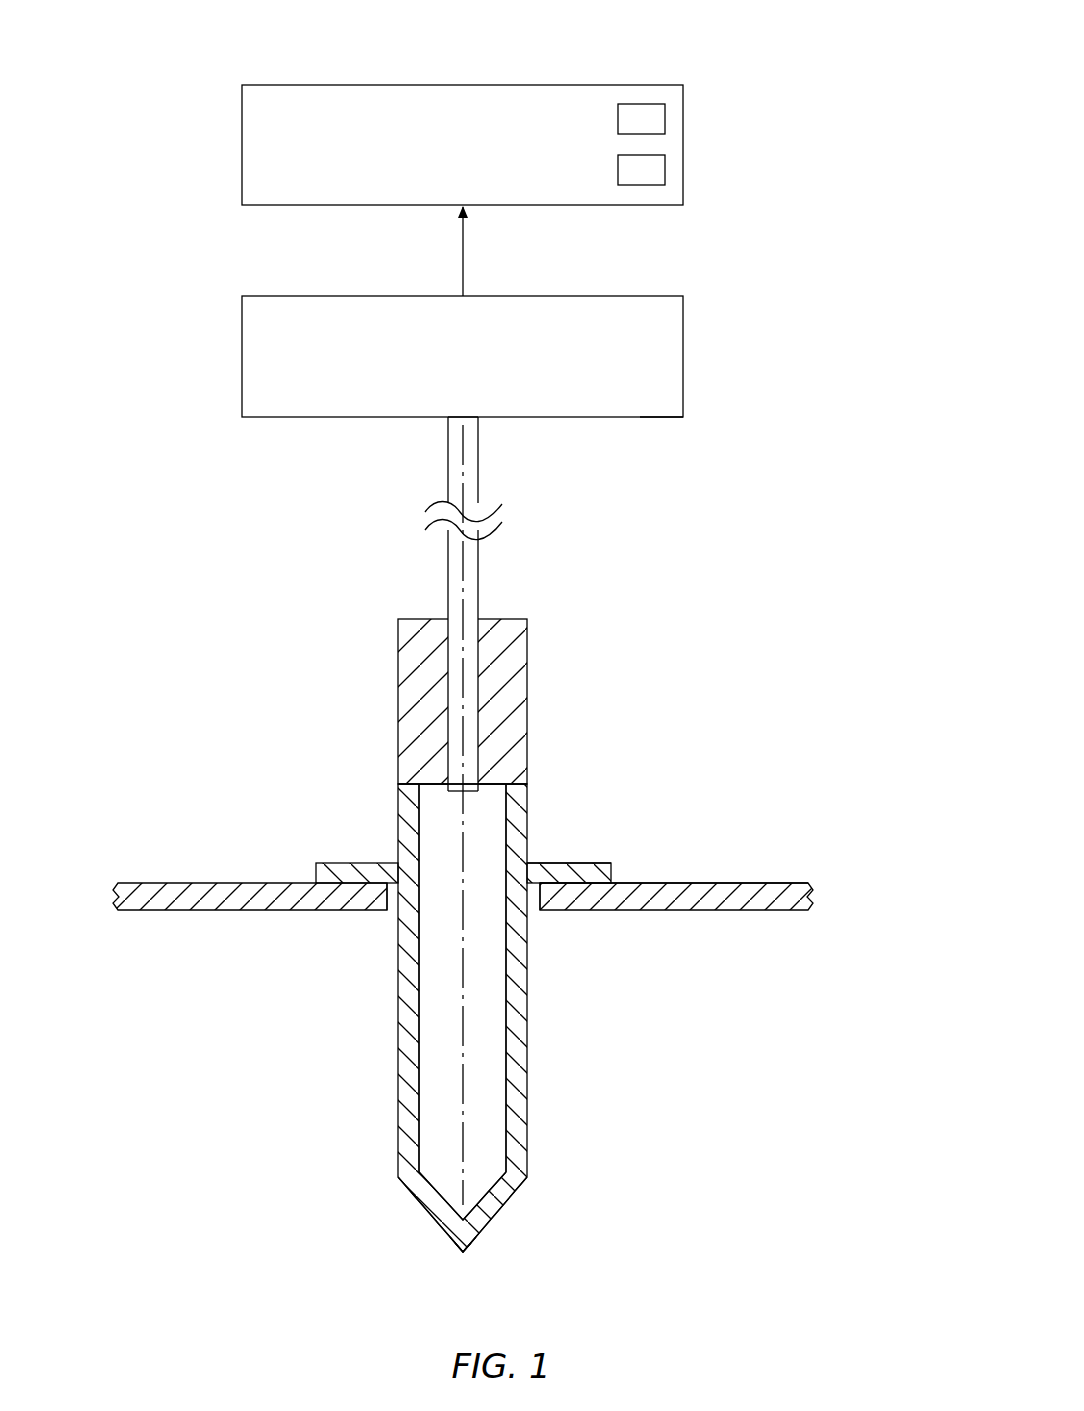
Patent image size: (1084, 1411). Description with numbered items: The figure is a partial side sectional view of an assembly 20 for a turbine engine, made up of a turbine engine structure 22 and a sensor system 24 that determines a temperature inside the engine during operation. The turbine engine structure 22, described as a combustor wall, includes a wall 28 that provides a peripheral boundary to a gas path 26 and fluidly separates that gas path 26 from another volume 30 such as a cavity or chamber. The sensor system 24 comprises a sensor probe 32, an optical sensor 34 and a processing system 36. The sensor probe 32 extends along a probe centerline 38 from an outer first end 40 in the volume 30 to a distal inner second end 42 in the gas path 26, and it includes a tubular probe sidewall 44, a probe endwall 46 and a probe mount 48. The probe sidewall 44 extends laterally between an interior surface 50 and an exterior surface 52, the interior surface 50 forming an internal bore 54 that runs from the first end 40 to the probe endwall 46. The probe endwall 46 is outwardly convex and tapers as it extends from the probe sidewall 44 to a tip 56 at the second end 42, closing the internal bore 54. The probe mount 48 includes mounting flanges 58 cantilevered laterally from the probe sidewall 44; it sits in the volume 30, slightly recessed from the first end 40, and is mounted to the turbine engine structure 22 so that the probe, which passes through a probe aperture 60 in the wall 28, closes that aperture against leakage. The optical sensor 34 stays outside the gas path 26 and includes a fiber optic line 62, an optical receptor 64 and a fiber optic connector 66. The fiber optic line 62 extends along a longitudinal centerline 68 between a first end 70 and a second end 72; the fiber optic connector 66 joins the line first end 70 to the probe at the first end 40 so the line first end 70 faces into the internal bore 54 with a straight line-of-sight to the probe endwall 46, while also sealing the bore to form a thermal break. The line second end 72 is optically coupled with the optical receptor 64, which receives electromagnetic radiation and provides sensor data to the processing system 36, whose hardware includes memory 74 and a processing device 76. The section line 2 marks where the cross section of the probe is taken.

The assembly 20 is at (802, 80).
The turbine engine structure 22 is at (824, 882).
The sensor system 24 is at (175, 128).
The gas path 26 is at (228, 1226).
The wall 28 is at (767, 883).
The volume 30 is at (228, 658).
The sensor probe 32 is at (463, 1017).
The optical sensor 34 is at (721, 365).
The processing system 36 is at (631, 85).
The probe centerline 38 is at (465, 1083).
The first end 40 is at (527, 782).
The second end 42 is at (463, 1252).
The probe sidewall 44 is at (528, 988).
The probe endwall 46 is at (502, 1215).
The probe mount 48 is at (602, 858).
The interior surface 50 is at (505, 957).
The exterior surface 52 is at (527, 933).
The internal bore 54 is at (438, 1157).
The tip 56 is at (463, 1247).
The mounting flange 58 is at (333, 862).
The probe aperture 60 is at (387, 912).
The fiber optic line 62 is at (479, 574).
The optical receptor 64 is at (652, 419).
The fiber optic connector 66 is at (529, 690).
The longitudinal centerline 68 is at (463, 590).
The first end 70 is at (458, 793).
The second end 72 is at (470, 417).
The memory 74 is at (665, 117).
The processing device 76 is at (665, 167).
The section line 2- 2 is at (323, 1050).